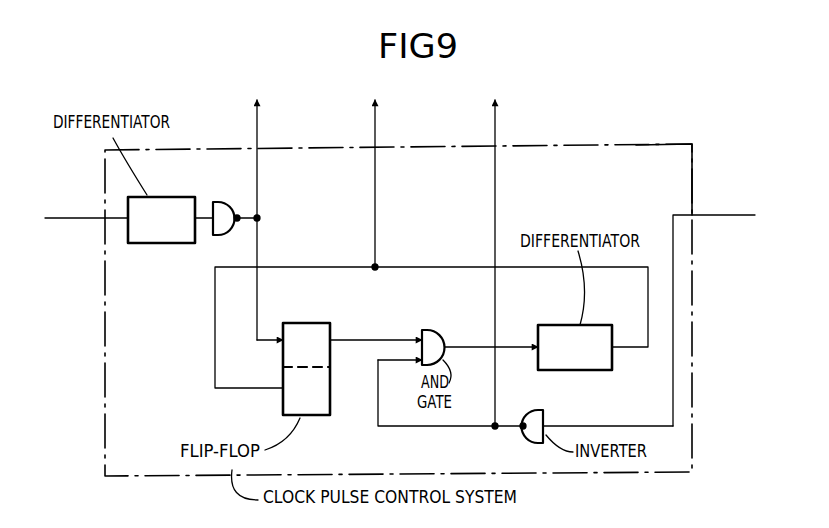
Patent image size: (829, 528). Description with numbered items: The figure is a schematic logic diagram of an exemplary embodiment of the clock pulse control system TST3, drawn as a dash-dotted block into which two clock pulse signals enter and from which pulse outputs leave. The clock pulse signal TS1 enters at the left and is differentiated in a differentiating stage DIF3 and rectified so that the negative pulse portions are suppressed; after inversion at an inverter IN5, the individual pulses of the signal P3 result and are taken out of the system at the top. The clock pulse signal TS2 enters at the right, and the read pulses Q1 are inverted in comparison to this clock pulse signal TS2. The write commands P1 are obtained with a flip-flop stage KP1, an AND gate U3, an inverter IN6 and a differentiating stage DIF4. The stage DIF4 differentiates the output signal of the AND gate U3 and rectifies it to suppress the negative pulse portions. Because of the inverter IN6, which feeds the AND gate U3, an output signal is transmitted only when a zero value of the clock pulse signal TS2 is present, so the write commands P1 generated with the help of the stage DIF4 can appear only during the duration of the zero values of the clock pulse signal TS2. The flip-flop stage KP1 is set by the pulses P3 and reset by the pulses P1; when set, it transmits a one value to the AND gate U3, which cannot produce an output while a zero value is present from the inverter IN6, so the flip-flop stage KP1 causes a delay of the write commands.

The clock pulse signal TS1 is at (86, 205).
The differentiating stage DIF3 is at (161, 220).
The inverter IN5 is at (226, 204).
The pulses P3 is at (270, 218).
The write commands P1 is at (388, 183).
The read pulses Q1 is at (507, 262).
The clock pulse control system TST3 is at (572, 146).
The clock pulse signal TS2 is at (714, 306).
The flip-flop stage KP1 is at (306, 355).
The AND gate U3 is at (434, 333).
The differentiating stage DIF4 is at (575, 347).
The inverter IN6 is at (584, 413).